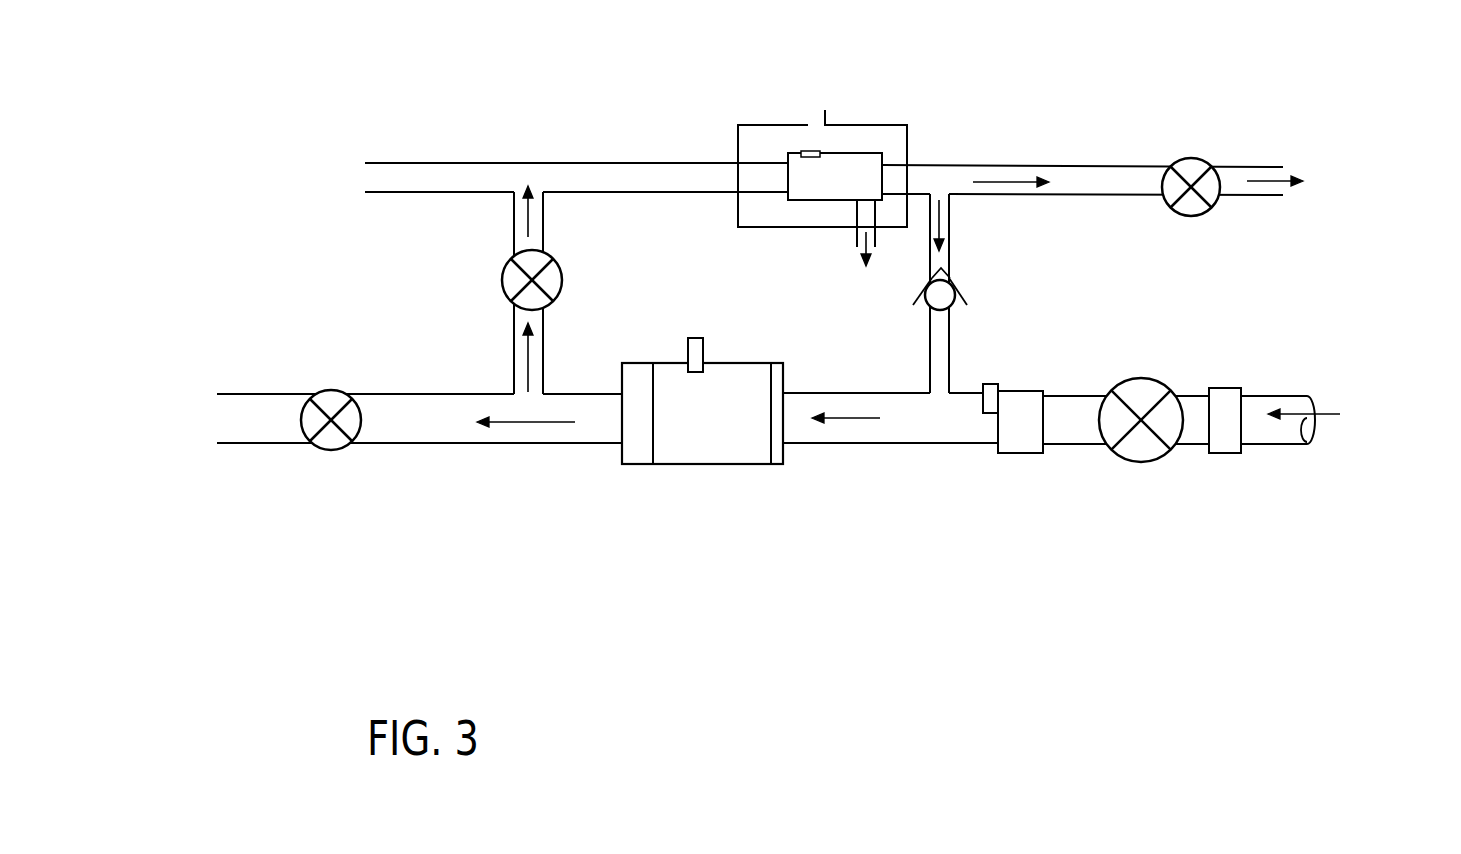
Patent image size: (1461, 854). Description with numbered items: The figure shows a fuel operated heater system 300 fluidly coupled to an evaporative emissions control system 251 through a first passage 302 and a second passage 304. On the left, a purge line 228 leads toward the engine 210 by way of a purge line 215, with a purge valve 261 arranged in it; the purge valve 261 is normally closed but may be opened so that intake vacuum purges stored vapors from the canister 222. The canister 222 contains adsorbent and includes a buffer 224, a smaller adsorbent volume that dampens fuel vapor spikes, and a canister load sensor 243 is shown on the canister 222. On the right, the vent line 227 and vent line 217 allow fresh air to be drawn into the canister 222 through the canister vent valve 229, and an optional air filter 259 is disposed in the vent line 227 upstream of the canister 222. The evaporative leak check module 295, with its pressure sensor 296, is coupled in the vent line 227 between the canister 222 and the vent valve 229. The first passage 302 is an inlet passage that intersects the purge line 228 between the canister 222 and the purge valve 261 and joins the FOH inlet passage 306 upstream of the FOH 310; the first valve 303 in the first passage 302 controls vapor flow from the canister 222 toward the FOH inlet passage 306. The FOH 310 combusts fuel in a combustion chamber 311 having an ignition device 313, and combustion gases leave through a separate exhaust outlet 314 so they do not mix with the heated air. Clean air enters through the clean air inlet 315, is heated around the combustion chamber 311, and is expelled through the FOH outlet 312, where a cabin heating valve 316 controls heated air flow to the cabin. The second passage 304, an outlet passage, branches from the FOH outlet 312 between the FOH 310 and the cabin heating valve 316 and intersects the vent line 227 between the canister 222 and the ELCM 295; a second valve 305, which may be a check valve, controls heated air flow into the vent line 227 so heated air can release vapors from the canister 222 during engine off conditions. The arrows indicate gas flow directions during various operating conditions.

The FOH system 300 is at (1318, 79).
The FOH inlet passage 306 is at (440, 162).
The first passage 302 is at (513, 350).
The first valve 303 is at (502, 281).
The FOH 310 is at (890, 123).
The clean air inlet 315 is at (806, 112).
The combustion chamber 311 is at (835, 176).
The ignition device 313 is at (810, 151).
The exhaust outlet 314 is at (857, 238).
The FOH outlet 312 is at (1087, 165).
The cabin heating valve 316 is at (1190, 157).
The second passage 304 is at (950, 242).
The second valve 305 is at (956, 290).
The purge line 215 is at (618, 418).
The engine 210 is at (122, 418).
The purge line 228 is at (451, 431).
The purge valve 261 is at (331, 390).
The canister 222 is at (782, 362).
The buffer 224 is at (643, 377).
The canister load sensor 243 is at (700, 337).
The vent line 217 is at (876, 444).
The vent line 227 is at (935, 431).
The evaporative leak check module 295 is at (1015, 390).
The pressure sensor 296 is at (992, 383).
The canister vent valve 229 is at (1135, 377).
The evaporative emissions control system 251 is at (1214, 335).
The air filter 259 is at (1222, 388).